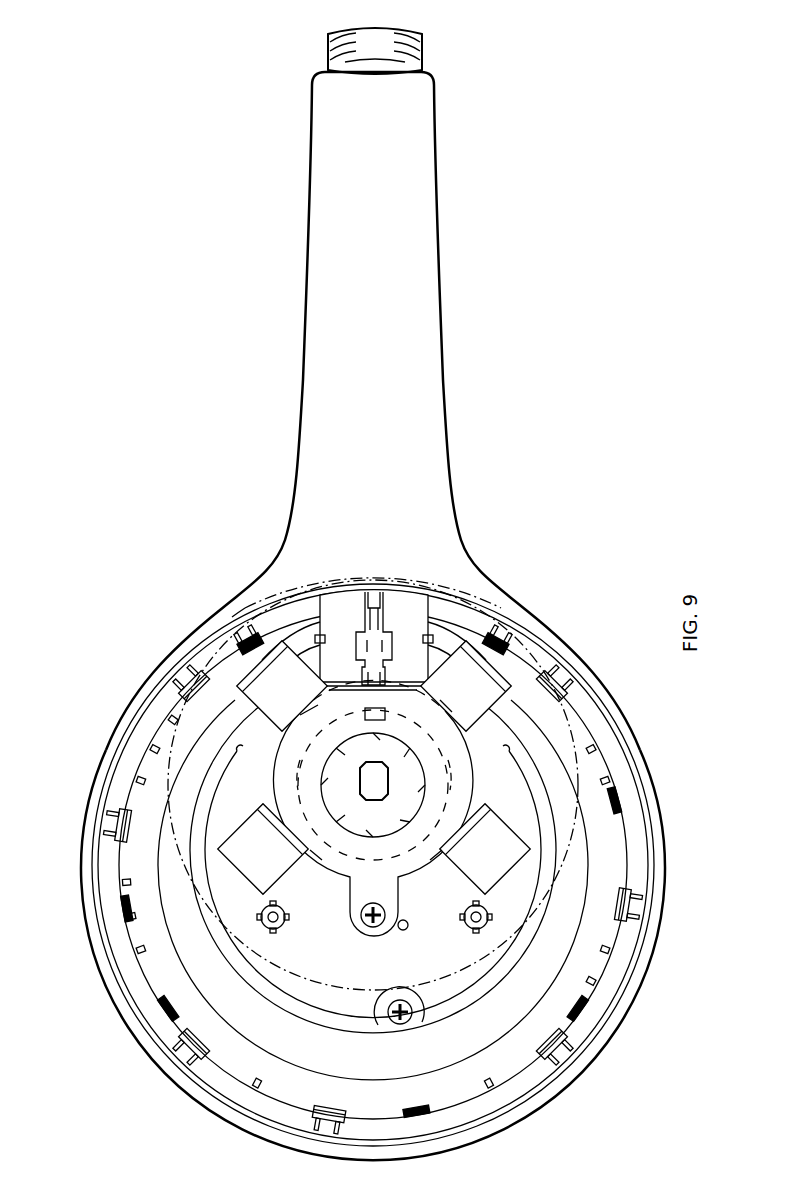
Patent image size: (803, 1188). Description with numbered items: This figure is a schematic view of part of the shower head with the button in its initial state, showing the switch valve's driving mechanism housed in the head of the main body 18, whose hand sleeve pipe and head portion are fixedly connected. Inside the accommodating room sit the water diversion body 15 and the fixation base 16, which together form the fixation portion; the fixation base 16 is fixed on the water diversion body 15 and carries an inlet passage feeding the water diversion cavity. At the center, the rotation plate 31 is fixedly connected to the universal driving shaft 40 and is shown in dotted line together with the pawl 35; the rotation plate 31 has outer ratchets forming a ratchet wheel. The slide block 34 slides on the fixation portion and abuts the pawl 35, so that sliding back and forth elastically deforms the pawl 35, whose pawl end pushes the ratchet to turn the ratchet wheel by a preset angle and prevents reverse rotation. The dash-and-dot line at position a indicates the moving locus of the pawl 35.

The water diversion body 15 is at (192, 938).
The fixation base 16 is at (312, 822).
The main body 18 is at (350, 490).
The rotation plate 31 is at (397, 803).
The slide block 34 is at (383, 630).
The pawl 35 is at (420, 707).
The universal driving shaft 40 is at (380, 782).
The junction point a is at (293, 593).